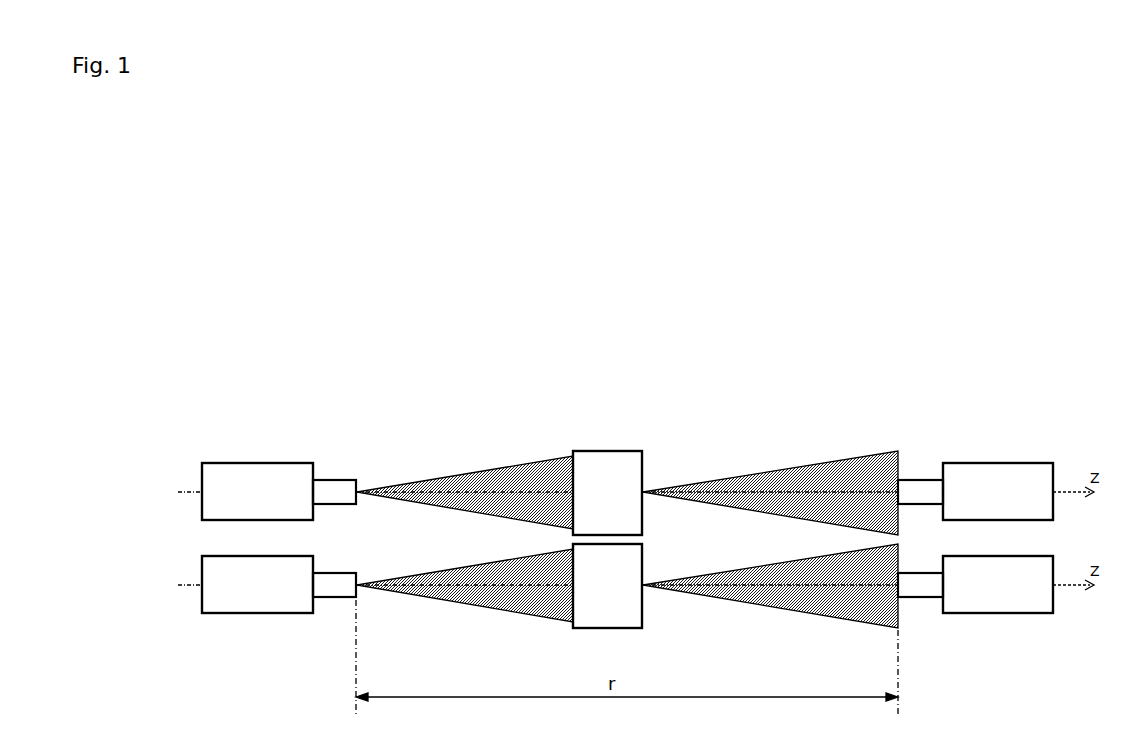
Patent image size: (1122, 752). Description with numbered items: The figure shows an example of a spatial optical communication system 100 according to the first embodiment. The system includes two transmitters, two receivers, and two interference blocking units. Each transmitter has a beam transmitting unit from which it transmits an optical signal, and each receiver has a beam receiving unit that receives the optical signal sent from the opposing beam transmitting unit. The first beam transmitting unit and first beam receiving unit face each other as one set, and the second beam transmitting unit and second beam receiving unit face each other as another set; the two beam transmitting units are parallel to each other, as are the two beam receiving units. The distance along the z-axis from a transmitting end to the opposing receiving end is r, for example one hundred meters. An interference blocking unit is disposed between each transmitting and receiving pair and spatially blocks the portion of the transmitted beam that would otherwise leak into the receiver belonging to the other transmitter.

The spatial optical communication system 100 is at (437, 403).